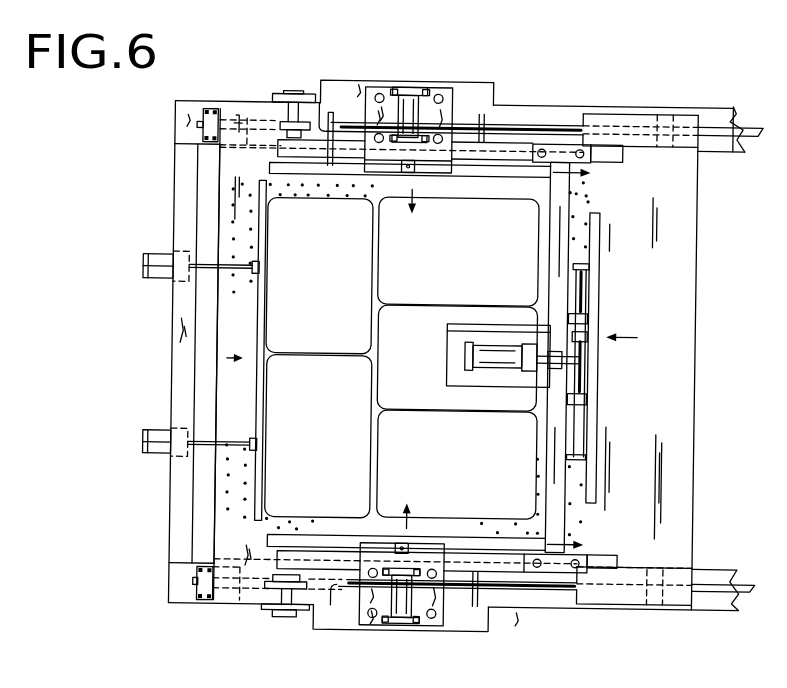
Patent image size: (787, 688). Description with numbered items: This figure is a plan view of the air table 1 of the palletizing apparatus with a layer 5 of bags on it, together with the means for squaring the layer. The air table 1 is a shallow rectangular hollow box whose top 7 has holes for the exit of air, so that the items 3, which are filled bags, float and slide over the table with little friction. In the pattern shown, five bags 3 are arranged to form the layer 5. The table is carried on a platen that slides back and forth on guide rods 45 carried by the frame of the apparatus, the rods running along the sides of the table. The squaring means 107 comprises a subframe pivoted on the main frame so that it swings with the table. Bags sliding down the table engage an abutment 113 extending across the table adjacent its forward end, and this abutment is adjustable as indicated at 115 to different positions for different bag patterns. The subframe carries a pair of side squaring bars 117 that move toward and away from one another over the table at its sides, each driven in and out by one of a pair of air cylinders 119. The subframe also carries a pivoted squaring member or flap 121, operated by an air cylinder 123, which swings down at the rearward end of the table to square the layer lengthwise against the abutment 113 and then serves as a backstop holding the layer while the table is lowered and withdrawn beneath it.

The air table 1 is at (246, 321).
The items (filled bags) 3 is at (331, 296).
The layer 5 is at (258, 389).
The top 7 is at (227, 492).
The guide rods 45 is at (565, 123).
The squaring means 107 is at (461, 82).
The abutment 113 is at (204, 219).
The abutment adjustment 115 is at (141, 268).
The side squaring bars 117 is at (521, 174).
The air cylinders 119 is at (415, 70).
The squaring member or flap 121 is at (598, 301).
The air cylinder 123 is at (485, 346).